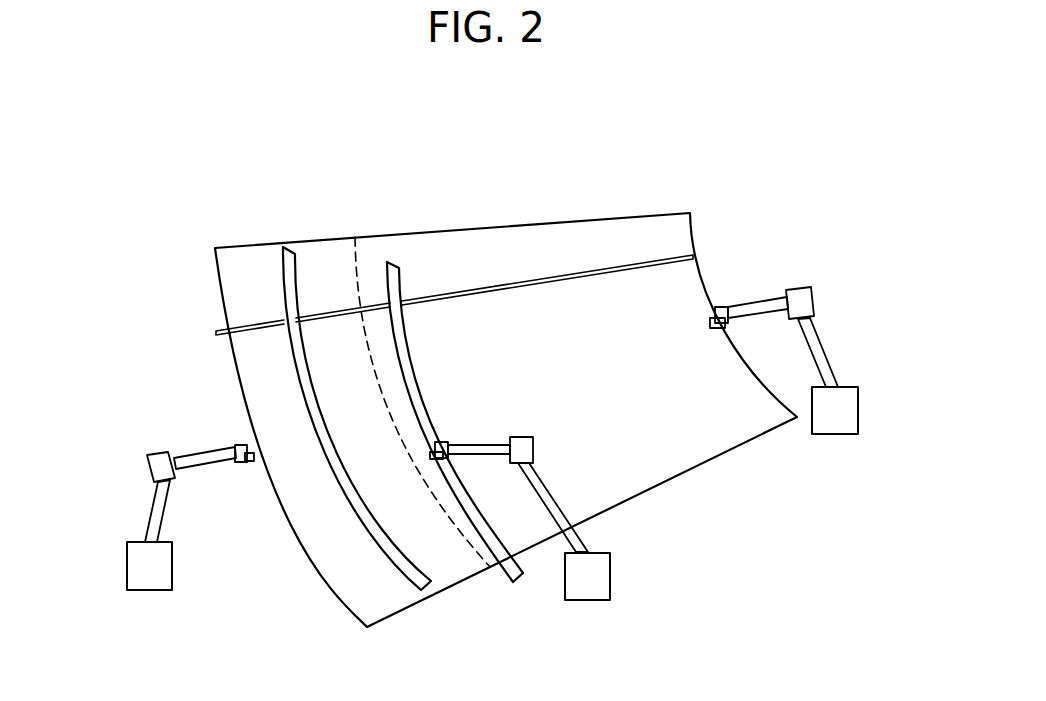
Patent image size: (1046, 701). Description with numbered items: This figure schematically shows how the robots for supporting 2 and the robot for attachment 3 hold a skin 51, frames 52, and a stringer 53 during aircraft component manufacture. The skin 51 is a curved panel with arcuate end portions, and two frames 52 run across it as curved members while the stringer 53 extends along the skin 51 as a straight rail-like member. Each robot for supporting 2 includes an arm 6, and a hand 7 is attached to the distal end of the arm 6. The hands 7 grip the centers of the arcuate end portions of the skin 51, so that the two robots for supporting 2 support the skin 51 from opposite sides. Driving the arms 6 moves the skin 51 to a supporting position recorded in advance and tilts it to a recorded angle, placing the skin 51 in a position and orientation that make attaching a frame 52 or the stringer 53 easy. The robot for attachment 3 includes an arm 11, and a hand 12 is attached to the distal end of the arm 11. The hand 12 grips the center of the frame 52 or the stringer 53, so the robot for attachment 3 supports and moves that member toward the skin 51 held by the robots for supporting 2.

The robot for supporting 2 is at (858, 410).
The robot for attachment 3 is at (610, 575).
The arm 6 is at (822, 342).
The hand 7 is at (722, 307).
The arm 11 is at (553, 490).
The hand 12 is at (437, 442).
The skin 51 is at (506, 226).
The frame 52 is at (297, 277).
The stringer 53 is at (549, 284).